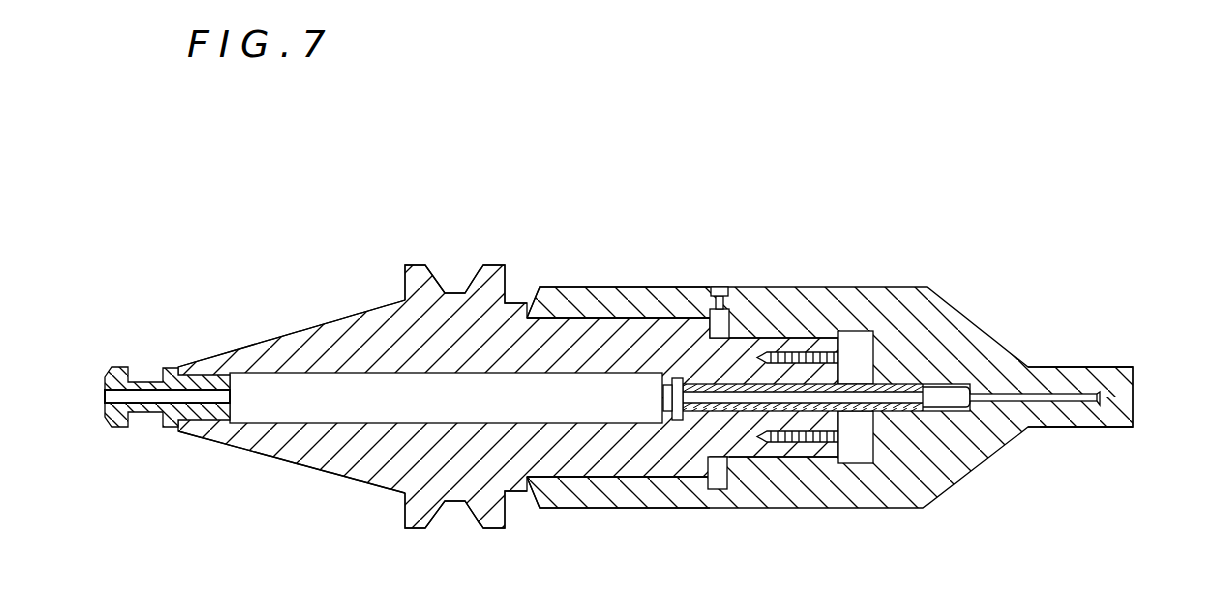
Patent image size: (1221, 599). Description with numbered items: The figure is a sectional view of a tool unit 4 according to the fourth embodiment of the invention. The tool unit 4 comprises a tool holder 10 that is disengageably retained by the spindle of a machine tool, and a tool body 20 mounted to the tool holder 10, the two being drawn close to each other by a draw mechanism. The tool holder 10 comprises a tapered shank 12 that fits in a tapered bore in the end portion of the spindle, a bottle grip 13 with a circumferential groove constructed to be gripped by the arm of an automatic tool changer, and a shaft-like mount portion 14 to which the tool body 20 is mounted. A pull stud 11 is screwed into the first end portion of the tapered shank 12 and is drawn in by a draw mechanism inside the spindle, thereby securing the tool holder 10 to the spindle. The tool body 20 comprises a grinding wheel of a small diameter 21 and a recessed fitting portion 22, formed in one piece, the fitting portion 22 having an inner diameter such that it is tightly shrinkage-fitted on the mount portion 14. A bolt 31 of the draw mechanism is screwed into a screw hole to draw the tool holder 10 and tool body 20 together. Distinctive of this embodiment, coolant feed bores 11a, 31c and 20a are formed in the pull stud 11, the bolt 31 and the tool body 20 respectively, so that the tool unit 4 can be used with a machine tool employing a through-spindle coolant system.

The tool unit 4 is at (780, 212).
The tool holder 10 is at (237, 338).
The pull stud 11 is at (115, 367).
The coolant feed bore 11a is at (193, 400).
The tapered shank 12 is at (332, 338).
The bottle grip 13 is at (413, 280).
The mount portion 14 is at (568, 340).
The tool body 20 is at (948, 303).
The coolant feed bore 20a is at (1105, 372).
The grinding wheel of a small diameter 21 is at (1052, 378).
The fitting portion 22 is at (627, 312).
The bolt 31 is at (660, 398).
The coolant feed bore 31c is at (858, 398).